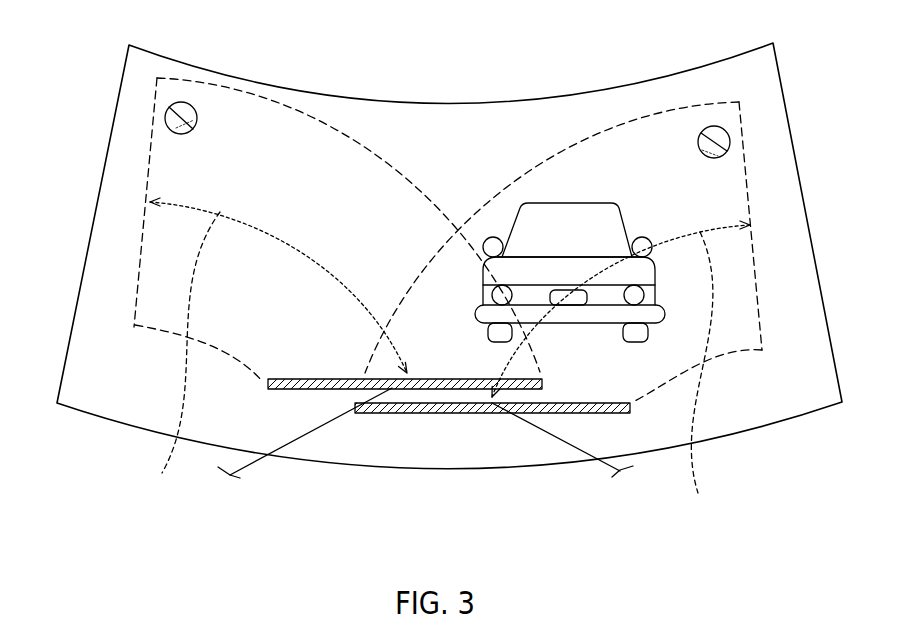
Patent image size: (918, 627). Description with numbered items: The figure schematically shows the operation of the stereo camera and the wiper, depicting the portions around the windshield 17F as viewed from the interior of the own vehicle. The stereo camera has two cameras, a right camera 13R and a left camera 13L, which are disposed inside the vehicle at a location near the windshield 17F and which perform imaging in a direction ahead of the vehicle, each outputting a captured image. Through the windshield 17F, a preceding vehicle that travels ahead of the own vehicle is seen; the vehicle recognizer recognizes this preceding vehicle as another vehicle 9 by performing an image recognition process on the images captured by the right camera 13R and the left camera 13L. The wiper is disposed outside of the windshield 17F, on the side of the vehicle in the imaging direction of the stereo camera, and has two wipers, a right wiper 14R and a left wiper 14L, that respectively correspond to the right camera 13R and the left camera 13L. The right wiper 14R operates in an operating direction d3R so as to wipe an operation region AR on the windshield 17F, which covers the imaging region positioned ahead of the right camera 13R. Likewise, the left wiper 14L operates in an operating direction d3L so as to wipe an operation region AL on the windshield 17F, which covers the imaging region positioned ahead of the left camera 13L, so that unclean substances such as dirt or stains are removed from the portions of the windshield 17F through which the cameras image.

The windshield 17F is at (812, 245).
The left camera 13L is at (166, 113).
The right camera 13R is at (730, 137).
The another vehicle 9 is at (565, 203).
The operation region AL is at (266, 104).
The operation region AR is at (672, 112).
The left wiper 14L is at (335, 390).
The right wiper 14R is at (572, 415).
The operating direction d3L is at (181, 361).
The operating direction d3R is at (701, 383).